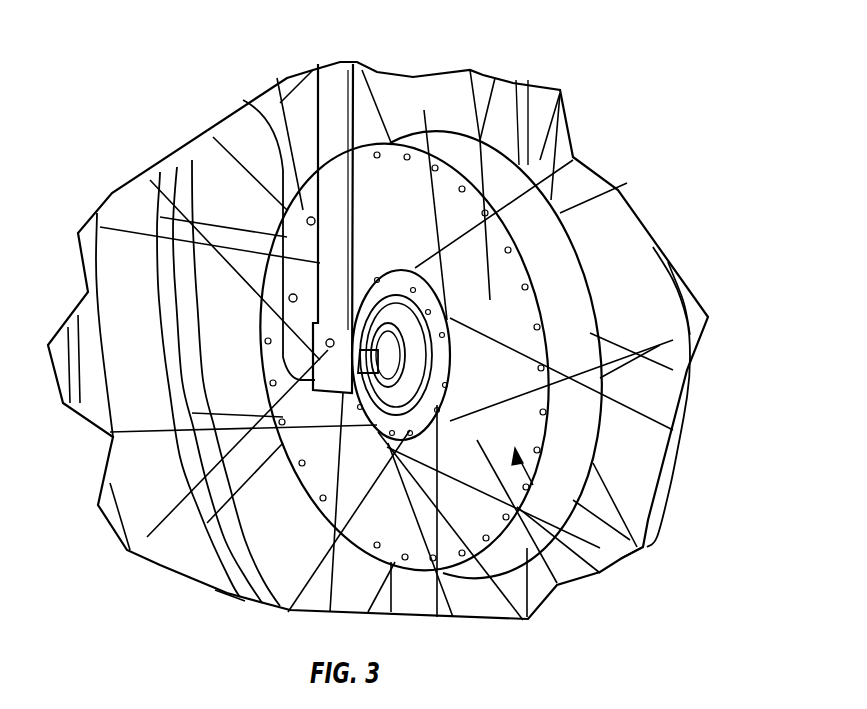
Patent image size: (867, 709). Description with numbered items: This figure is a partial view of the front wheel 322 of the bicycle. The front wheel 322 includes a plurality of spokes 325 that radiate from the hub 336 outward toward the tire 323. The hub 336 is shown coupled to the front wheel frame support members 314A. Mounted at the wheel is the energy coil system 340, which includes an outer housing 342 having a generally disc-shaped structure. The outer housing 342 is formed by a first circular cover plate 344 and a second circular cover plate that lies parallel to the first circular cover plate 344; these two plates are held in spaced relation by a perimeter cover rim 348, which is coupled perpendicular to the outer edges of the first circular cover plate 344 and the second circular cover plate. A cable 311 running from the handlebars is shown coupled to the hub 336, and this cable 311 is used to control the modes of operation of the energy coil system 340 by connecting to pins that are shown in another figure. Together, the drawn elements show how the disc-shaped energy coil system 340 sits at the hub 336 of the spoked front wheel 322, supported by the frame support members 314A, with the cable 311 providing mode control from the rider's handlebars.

The cable 311 is at (287, 168).
The front wheel frame support members 314A is at (340, 83).
The front wheel 322 is at (165, 140).
The tire 323 is at (123, 537).
The spokes 325 is at (535, 115).
The hub 336 is at (230, 593).
The energy coil system 340 is at (548, 412).
The outer housing 342 is at (570, 273).
The first circular cover plate 344 is at (620, 558).
The perimeter cover rim 348 is at (558, 325).